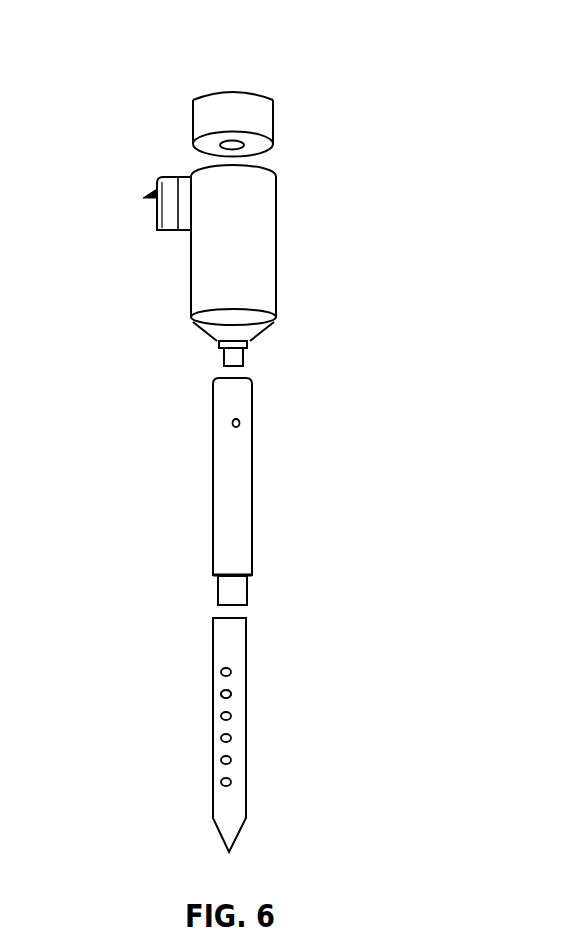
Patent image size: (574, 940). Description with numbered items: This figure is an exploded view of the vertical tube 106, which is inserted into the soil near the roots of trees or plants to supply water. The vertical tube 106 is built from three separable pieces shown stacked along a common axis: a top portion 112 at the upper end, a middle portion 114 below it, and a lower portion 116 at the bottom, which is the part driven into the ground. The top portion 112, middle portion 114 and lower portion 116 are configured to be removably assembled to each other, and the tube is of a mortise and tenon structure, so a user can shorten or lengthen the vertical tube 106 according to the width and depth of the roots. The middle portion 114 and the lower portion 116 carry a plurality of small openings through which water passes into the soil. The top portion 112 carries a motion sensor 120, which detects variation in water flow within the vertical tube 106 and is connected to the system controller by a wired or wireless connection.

The vertical tube 106 is at (208, 56).
The top portion 112 is at (259, 231).
The middle portion 114 is at (229, 501).
The lower portion 116 is at (237, 749).
The motion sensor 120 is at (274, 117).